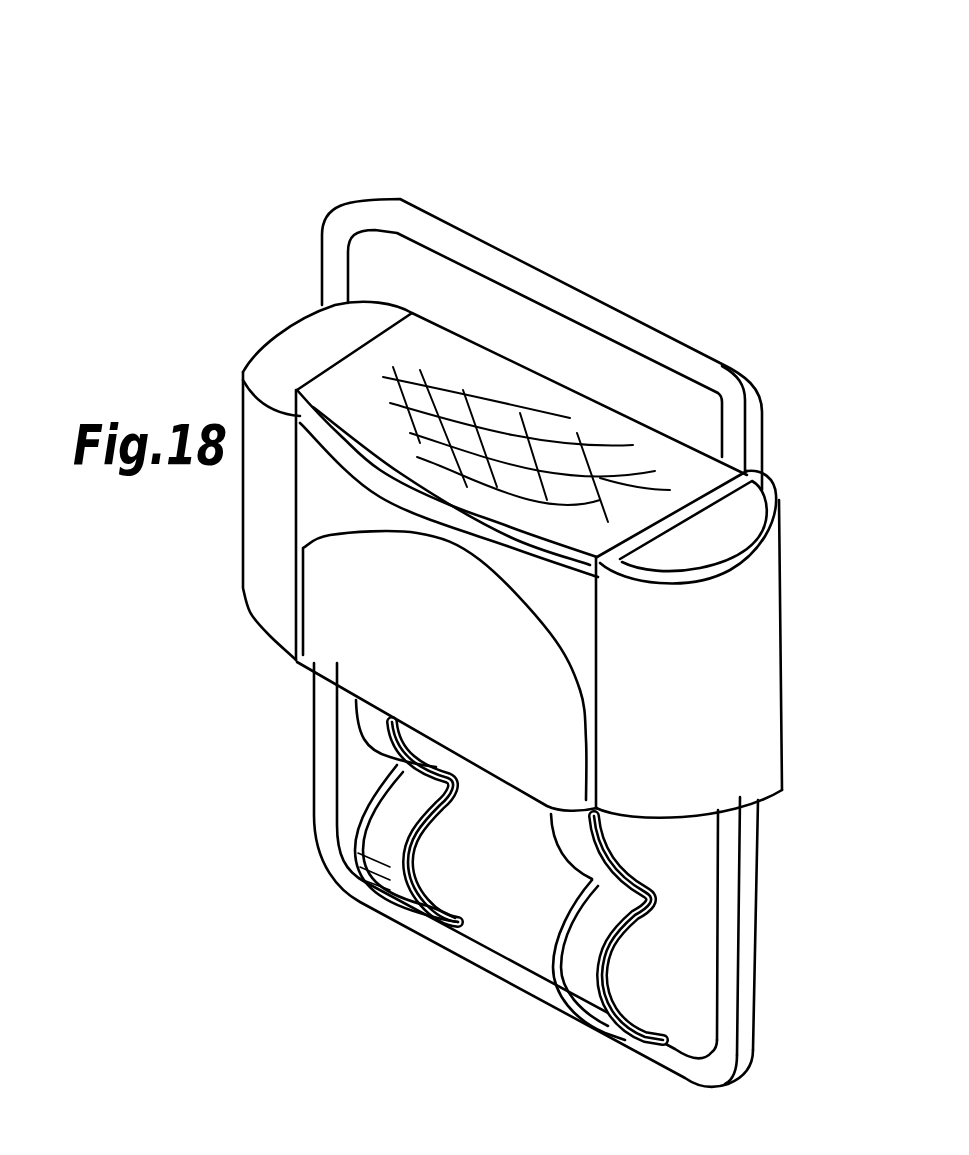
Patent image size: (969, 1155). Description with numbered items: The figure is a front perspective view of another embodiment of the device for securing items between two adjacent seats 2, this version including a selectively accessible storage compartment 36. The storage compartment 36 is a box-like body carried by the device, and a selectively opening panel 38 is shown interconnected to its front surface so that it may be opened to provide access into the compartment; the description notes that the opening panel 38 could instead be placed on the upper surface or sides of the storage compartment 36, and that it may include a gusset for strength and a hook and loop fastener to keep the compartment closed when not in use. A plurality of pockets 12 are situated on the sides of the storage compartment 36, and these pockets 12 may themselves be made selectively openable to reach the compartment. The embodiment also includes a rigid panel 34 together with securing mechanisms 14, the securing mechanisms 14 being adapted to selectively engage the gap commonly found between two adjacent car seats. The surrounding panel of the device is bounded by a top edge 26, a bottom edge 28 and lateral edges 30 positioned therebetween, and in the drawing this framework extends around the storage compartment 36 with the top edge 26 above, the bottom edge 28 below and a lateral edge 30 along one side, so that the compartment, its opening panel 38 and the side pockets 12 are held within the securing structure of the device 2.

The device for securing items between two adjacent seats 2 is at (282, 160).
The pocket 12 is at (298, 350).
The securing mechanism 14 is at (568, 963).
The top edge 26 is at (530, 275).
The bottom edge 28 is at (470, 960).
The lateral edge 30 is at (824, 906).
The rigid panel 34 is at (490, 893).
The storage compartment 36 is at (568, 463).
The opening panel 38 is at (398, 645).